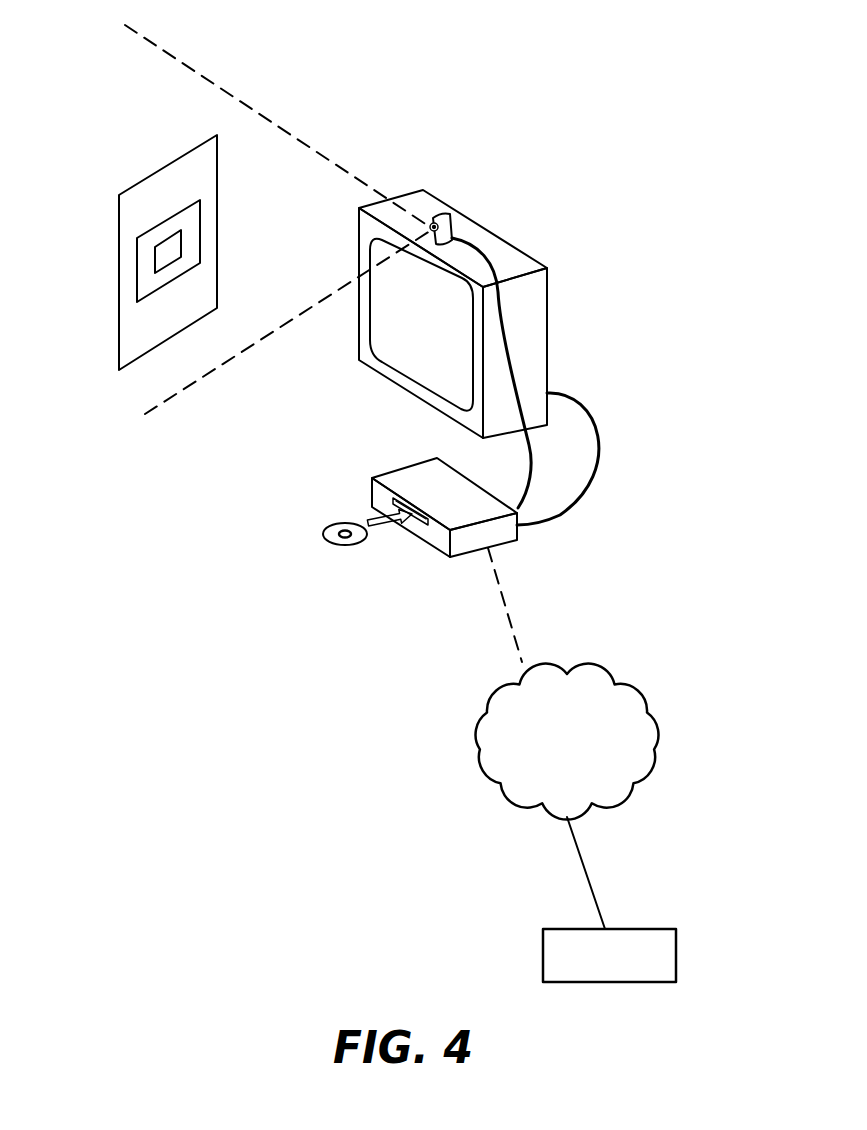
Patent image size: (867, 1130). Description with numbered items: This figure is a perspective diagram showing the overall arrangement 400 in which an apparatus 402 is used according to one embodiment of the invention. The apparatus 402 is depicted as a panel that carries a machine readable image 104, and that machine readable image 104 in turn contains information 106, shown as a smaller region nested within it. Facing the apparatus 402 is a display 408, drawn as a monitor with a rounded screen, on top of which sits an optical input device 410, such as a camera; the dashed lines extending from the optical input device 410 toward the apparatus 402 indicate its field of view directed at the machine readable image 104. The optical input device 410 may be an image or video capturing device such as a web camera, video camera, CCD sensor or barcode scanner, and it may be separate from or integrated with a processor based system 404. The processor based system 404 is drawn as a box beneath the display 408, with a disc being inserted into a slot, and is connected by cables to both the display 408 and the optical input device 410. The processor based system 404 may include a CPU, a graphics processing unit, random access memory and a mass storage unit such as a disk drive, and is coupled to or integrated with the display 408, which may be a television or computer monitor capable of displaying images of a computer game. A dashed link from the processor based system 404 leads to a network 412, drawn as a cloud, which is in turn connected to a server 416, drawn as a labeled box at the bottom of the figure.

The system 400 is at (428, 72).
The apparatus 402 is at (150, 146).
The machine readable image 104 is at (168, 273).
The information 106 is at (168, 252).
The processor based system 404 is at (403, 478).
The display 408 is at (413, 367).
The optical input device 410 is at (445, 219).
The network 412 is at (610, 665).
The server 416 is at (653, 929).